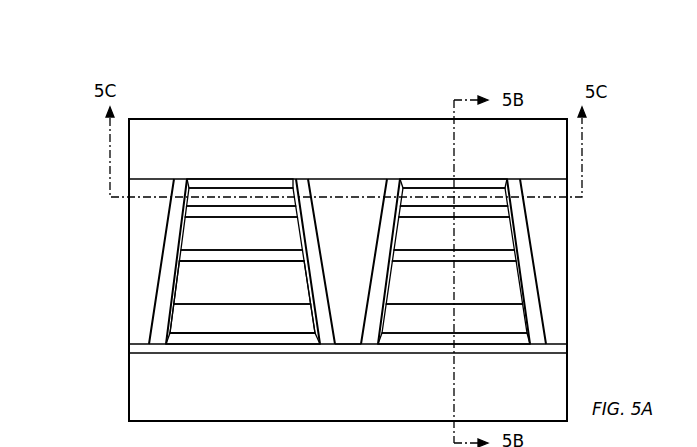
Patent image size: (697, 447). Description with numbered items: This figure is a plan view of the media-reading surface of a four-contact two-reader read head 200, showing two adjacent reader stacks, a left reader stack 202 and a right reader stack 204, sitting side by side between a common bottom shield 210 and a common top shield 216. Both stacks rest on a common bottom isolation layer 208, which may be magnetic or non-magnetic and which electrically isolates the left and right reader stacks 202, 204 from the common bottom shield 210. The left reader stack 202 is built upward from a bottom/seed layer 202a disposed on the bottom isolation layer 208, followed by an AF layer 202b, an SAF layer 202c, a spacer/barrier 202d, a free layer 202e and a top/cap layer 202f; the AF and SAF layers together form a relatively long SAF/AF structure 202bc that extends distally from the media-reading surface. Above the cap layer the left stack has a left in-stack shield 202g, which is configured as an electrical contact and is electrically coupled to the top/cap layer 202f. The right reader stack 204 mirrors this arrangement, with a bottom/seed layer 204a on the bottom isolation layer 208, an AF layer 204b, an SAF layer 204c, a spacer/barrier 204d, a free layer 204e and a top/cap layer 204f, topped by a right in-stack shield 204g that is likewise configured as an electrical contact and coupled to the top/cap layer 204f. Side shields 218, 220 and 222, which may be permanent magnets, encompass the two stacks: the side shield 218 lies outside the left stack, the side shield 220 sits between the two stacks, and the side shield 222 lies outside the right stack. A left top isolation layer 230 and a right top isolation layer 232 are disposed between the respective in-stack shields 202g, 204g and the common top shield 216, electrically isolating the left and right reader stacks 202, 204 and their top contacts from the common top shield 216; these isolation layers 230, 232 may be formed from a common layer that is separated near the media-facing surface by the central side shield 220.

The read head 200 is at (300, 103).
The left reader stack 202 is at (60, 188).
The bottom/seed layer 202a is at (176, 338).
The AF layer 202b is at (220, 328).
The SAF/AF structure 202bc is at (125, 260).
The SAF layer 202c is at (220, 292).
The spacer/barrier 202d is at (193, 254).
The free layer 202e is at (220, 246).
The top/cap layer 202f is at (193, 215).
The left in-stack shield 202g is at (205, 194).
The right reader stack 204 is at (577, 197).
The bottom/seed layer 204a is at (508, 336).
The AF layer 204b is at (402, 328).
The SAF layer 204c is at (402, 292).
The spacer/barrier 204d is at (503, 253).
The free layer 204e is at (402, 246).
The top/cap layer 204f is at (492, 212).
The right in-stack shield 204g is at (417, 193).
The common bottom isolation layer 208 is at (553, 348).
The common bottom shield 210 is at (335, 394).
The common top shield 216 is at (328, 157).
The side shield 218 is at (132, 205).
The side shield 220 is at (333, 205).
The side shield 222 is at (529, 205).
The left top isolation layer 230 is at (242, 183).
The right top isolation layer 232 is at (436, 183).